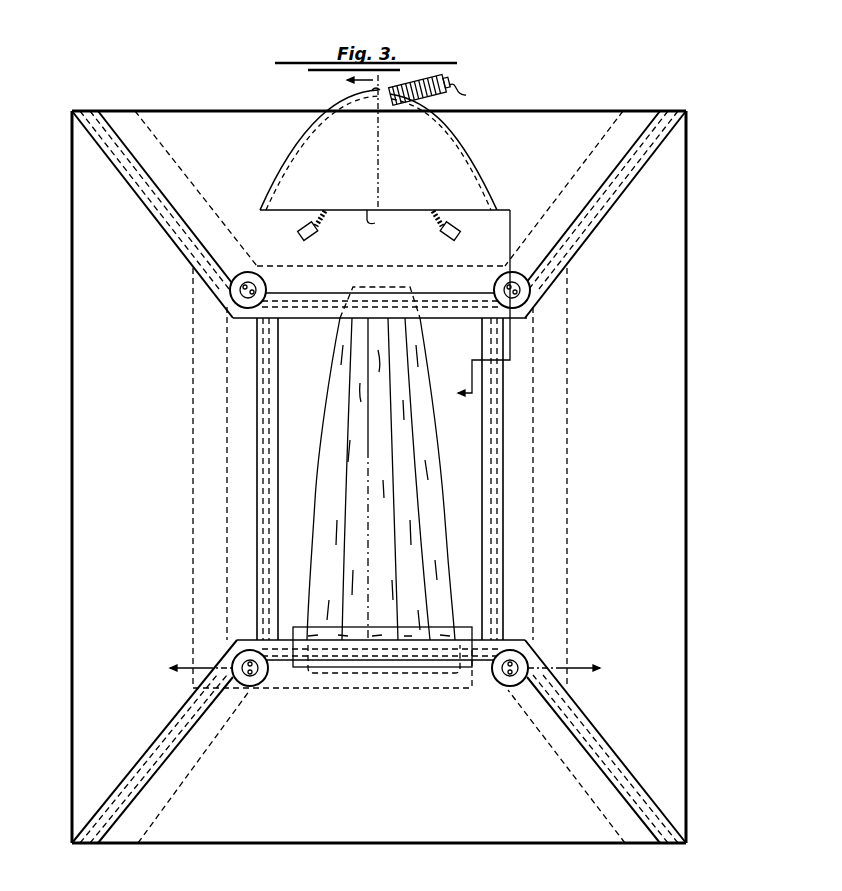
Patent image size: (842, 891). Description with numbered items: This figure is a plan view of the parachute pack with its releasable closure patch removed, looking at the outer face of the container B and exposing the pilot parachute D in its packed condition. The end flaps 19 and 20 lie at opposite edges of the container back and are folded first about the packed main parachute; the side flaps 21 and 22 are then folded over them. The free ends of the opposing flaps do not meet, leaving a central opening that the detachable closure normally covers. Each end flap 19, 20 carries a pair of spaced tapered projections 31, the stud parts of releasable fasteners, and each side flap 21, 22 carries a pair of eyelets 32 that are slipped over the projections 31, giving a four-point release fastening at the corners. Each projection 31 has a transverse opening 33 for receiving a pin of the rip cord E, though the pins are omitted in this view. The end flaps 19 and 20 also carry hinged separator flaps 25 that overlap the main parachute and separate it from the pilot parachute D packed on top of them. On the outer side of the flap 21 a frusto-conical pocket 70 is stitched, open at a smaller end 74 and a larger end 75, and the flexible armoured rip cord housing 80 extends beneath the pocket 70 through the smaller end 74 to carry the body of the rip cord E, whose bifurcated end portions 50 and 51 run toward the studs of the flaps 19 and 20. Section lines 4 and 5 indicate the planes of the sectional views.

The end flap 19 is at (87, 475).
The end flap 20 is at (660, 443).
The side flap 21 is at (528, 128).
The side flap 22 is at (407, 833).
The separator flap 25 is at (283, 575).
The tapered projection 31 is at (258, 288).
The eyelet fastener part 32 is at (398, 477).
The transverse opening 33 is at (250, 290).
The rip cord end portion 50 is at (322, 218).
The rip cord end portion 51 is at (440, 222).
The frusto-conical pocket 70 is at (425, 165).
The smaller pocket opening 74 is at (370, 89).
The larger pocket opening 75 is at (385, 221).
The rip cord housing 80 is at (443, 98).
The container B is at (657, 197).
The pilot parachute D is at (403, 487).
The rip cord E is at (464, 96).
The section line 4- 4 is at (379, 672).
The section line 5- 5 is at (421, 239).